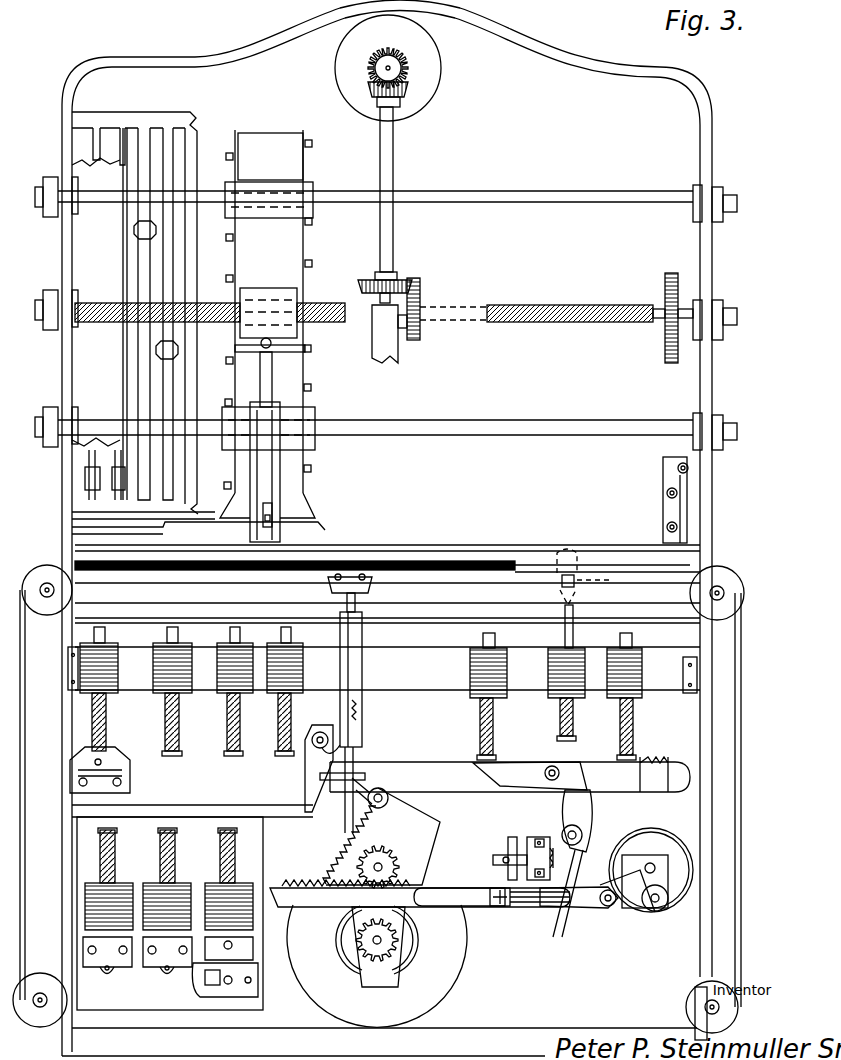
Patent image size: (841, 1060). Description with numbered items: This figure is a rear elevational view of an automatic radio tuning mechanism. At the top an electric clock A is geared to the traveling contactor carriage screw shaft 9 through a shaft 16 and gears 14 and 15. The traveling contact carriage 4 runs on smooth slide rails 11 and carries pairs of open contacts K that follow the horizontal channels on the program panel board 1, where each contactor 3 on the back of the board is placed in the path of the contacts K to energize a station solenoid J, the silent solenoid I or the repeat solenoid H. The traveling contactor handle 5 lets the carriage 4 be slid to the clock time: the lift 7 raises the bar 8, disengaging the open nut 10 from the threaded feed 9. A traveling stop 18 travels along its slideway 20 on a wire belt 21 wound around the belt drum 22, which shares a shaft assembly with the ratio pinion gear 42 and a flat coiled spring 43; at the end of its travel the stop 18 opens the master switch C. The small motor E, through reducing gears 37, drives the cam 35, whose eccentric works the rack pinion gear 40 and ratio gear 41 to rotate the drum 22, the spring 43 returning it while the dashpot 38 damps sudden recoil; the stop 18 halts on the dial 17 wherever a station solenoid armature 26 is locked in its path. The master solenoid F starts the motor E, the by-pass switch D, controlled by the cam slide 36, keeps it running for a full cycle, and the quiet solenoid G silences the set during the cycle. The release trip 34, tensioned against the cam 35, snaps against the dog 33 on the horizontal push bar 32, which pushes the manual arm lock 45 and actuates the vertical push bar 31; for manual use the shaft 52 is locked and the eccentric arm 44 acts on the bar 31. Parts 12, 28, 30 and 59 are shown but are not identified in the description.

The program panel board 1 is at (125, 268).
The contactor 3 is at (136, 229).
The traveling contact carriage 4 is at (240, 257).
The traveling contactor handle 5 is at (303, 517).
The lift 7 is at (320, 535).
The bar 8 is at (260, 378).
The traveling contactor carriage screw shaft 9 is at (540, 302).
The open nut 10 is at (268, 288).
The slide rails 11 is at (492, 428).
The bearing box 12 is at (312, 188).
The gear 14 is at (664, 360).
The gear 15 is at (370, 93).
The shaft 16 is at (396, 172).
The dial 17 is at (318, 545).
The traveling stop 18 is at (582, 598).
The slideway 20 is at (498, 546).
The wire belt 21 is at (436, 555).
The belt drum 22 is at (455, 968).
The station solenoid armatures 26 is at (106, 636).
The cross bar 28 is at (445, 622).
The head 30 is at (374, 588).
The vertical push bar 31 is at (363, 711).
The horizontal push bar 32 is at (453, 775).
The dog 33 is at (548, 778).
The release trip 34 is at (572, 790).
The cam 35 is at (648, 905).
The cam slide 36 is at (577, 940).
The reducing gears 37 is at (660, 918).
The dashpot 38 is at (485, 906).
The rack pinion gear 40 is at (390, 858).
The ratio gear 41 is at (330, 860).
The ratio pinion gear 42 is at (405, 945).
The flat coiled spring 43 is at (368, 963).
The eccentric arm 44 is at (388, 802).
The manual arm lock 45 is at (320, 795).
The shaft 52 is at (370, 940).
The swing plate 59 is at (440, 870).
The electric clock A is at (450, 75).
The master switch C is at (662, 500).
The by-pass switch D is at (505, 842).
The motor E is at (680, 880).
The master solenoid F is at (230, 865).
The quiet solenoid G is at (172, 865).
The repeat solenoid H is at (110, 865).
The silent solenoid I is at (107, 735).
The station solenoids J is at (185, 703).
The open contacts K is at (313, 225).